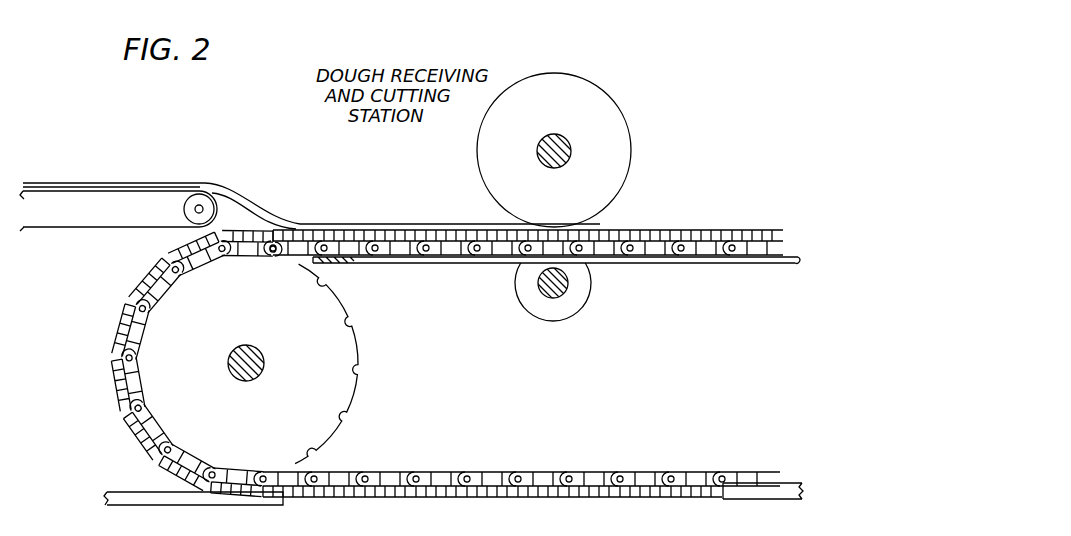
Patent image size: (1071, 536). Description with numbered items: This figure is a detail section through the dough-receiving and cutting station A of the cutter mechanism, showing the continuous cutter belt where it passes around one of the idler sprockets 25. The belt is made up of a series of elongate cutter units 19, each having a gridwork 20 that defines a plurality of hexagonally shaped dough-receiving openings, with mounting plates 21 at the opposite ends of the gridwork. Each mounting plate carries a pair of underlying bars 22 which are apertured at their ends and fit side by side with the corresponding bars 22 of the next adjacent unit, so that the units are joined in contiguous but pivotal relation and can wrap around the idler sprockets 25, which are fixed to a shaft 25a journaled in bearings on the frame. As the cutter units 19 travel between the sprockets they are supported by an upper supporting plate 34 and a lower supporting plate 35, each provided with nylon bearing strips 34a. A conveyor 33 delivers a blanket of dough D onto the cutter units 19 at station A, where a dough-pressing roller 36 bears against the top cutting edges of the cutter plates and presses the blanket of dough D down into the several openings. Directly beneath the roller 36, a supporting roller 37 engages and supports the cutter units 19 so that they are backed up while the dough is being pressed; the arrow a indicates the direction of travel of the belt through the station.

The cutter unit 19 is at (122, 382).
The gridwork 20 is at (432, 344).
The mounting plate 21 is at (463, 240).
The bar 22 is at (200, 262).
The idler sprocket 25 is at (275, 364).
The shaft 25a is at (263, 330).
The conveyor 33 is at (150, 193).
The upper supporting plate 34 is at (415, 262).
The nylon bearing strip 34a is at (757, 253).
The lower supporting plate 35 is at (785, 492).
The dough-pressing roller 36 is at (607, 110).
The supporting roller 37 is at (555, 313).
The blanket of dough D is at (247, 196).
The dough-receiving and cutting station A is at (391, 181).
The direction of travel a is at (704, 217).